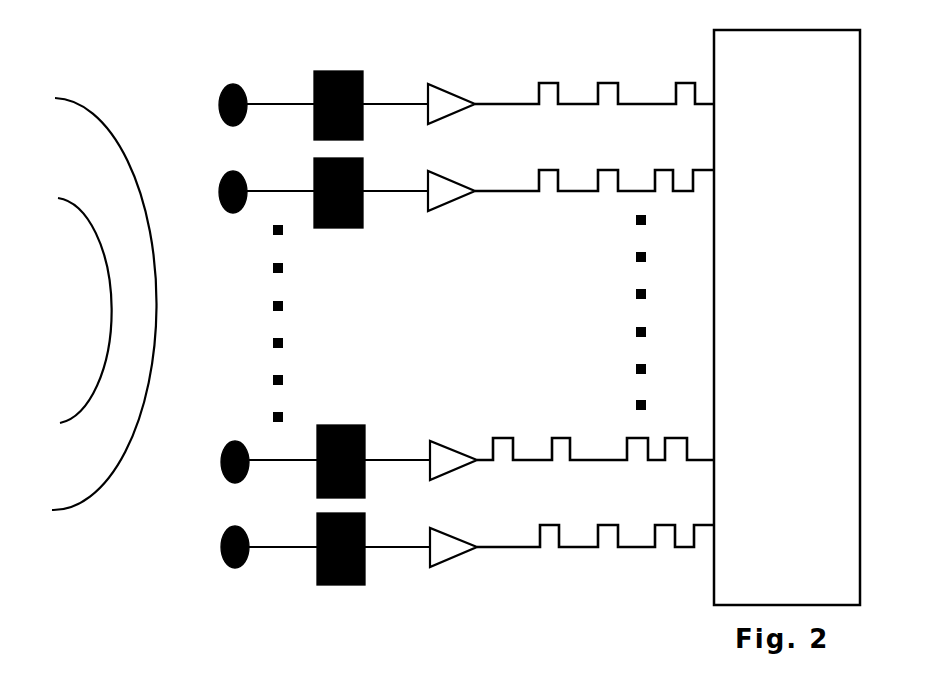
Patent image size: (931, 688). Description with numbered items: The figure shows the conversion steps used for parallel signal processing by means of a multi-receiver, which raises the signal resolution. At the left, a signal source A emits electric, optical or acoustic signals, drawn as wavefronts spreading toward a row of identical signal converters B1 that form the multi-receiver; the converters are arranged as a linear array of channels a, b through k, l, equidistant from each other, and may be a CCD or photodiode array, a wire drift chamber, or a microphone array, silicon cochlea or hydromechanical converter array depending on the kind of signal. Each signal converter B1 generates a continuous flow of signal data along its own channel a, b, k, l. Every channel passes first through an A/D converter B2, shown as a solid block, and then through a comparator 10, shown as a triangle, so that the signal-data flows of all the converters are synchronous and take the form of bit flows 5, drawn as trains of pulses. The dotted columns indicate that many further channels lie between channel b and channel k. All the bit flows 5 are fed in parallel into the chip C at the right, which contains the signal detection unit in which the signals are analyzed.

The signal source A is at (39, 301).
The signal converter B1 is at (234, 326).
The A/D converter B2 is at (339, 328).
The comparator 10 is at (452, 325).
The bit flow 5 is at (595, 315).
The chip C is at (787, 317).
The signal converter channel a is at (337, 96).
The signal converter channel b is at (337, 183).
The signal converter channel k is at (339, 453).
The signal converter channel l is at (339, 538).